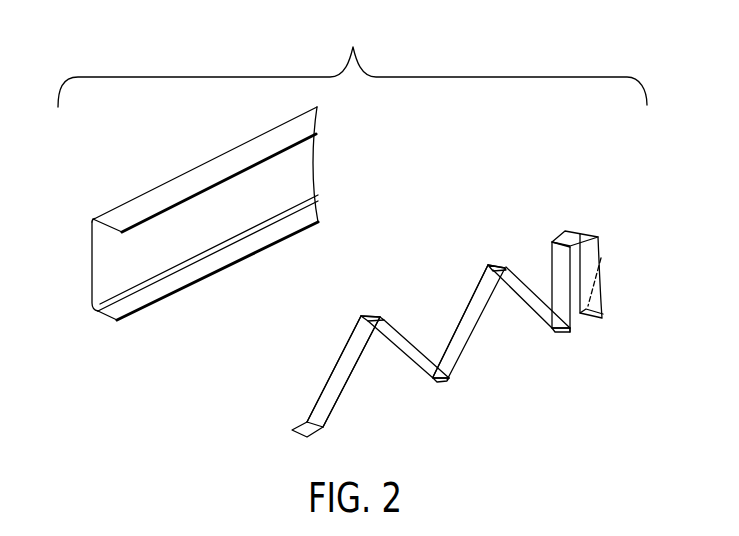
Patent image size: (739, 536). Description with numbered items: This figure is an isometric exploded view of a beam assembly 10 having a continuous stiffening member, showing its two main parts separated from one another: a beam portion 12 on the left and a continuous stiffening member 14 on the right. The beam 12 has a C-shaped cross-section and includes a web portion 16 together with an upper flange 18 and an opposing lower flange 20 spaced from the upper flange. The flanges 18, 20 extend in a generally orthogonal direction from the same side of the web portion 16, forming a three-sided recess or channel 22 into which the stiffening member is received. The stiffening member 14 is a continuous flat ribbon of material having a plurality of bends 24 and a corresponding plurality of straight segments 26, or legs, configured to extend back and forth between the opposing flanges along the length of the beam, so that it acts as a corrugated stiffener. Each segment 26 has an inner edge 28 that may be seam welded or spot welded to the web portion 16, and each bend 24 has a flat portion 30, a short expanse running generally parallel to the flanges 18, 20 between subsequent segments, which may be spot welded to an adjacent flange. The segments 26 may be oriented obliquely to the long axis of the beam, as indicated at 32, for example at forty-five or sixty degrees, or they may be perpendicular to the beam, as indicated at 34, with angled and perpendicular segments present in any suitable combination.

The beam assembly 10 is at (352, 61).
The beam portion 12 is at (72, 280).
The continuous stiffening member 14 is at (467, 357).
The web portion 16 is at (302, 172).
The upper flange 18 is at (155, 203).
The lower flange 20 is at (198, 283).
The channel 22 is at (237, 202).
The bends 24 is at (372, 311).
The straight segments 26 is at (405, 355).
The inner edge 28 is at (323, 365).
The flat portion 30 is at (303, 422).
The angled orientation of segments 32 is at (348, 357).
The perpendicular orientation of segments 34 is at (592, 258).